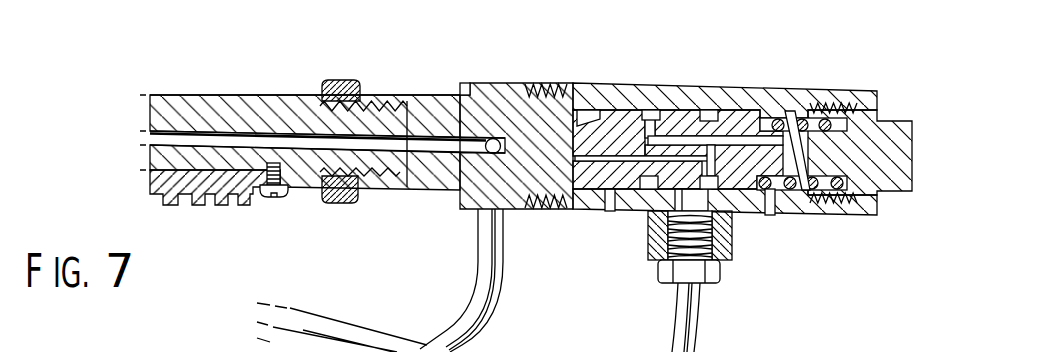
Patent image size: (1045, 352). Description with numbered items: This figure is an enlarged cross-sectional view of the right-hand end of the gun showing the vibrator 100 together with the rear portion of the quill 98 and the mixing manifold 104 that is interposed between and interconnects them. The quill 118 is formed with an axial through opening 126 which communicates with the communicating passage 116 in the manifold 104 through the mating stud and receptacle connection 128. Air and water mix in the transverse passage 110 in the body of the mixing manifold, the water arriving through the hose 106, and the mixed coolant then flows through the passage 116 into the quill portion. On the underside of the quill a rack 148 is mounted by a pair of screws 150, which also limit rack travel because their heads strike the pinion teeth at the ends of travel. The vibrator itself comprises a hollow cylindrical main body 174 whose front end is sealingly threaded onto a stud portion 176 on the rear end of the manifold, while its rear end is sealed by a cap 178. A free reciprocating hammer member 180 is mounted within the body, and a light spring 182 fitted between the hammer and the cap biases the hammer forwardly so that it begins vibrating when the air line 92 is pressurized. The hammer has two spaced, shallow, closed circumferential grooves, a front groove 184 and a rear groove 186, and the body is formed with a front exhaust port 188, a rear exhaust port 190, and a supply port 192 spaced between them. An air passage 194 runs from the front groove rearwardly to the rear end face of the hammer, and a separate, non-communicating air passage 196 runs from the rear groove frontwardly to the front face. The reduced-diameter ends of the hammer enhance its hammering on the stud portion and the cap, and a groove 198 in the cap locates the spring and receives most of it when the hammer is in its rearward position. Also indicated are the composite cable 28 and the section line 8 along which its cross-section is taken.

The quill portion 98 is at (355, 143).
The vibrator 100 is at (741, 182).
The mixing manifold 104 is at (432, 96).
The hose 106 is at (452, 318).
The transverse passage 110 is at (492, 138).
The communicating passage 116 is at (428, 152).
The quill 118 is at (285, 96).
The axial through opening 126 is at (233, 129).
The mating stud and receptacle connection 128 is at (378, 100).
The rack 148 is at (205, 207).
The screws 150 is at (283, 198).
The hollow cylindrical main body 174 is at (573, 86).
The stud portion 176 is at (547, 94).
The cap 178 is at (877, 218).
The hammer member 180 is at (613, 110).
The spring 182 is at (790, 112).
The front groove 184 is at (653, 110).
The rear groove 186 is at (713, 110).
The front exhaust port 188 is at (612, 212).
The rear exhaust port 190 is at (772, 215).
The supply port 192 is at (703, 202).
The air passage 194 is at (747, 145).
The air passage 196 is at (590, 170).
The groove 198 is at (845, 122).
The air line 92 is at (407, 327).
The section line 8— 8 is at (792, 351).
The composite cable 28 is at (910, 341).